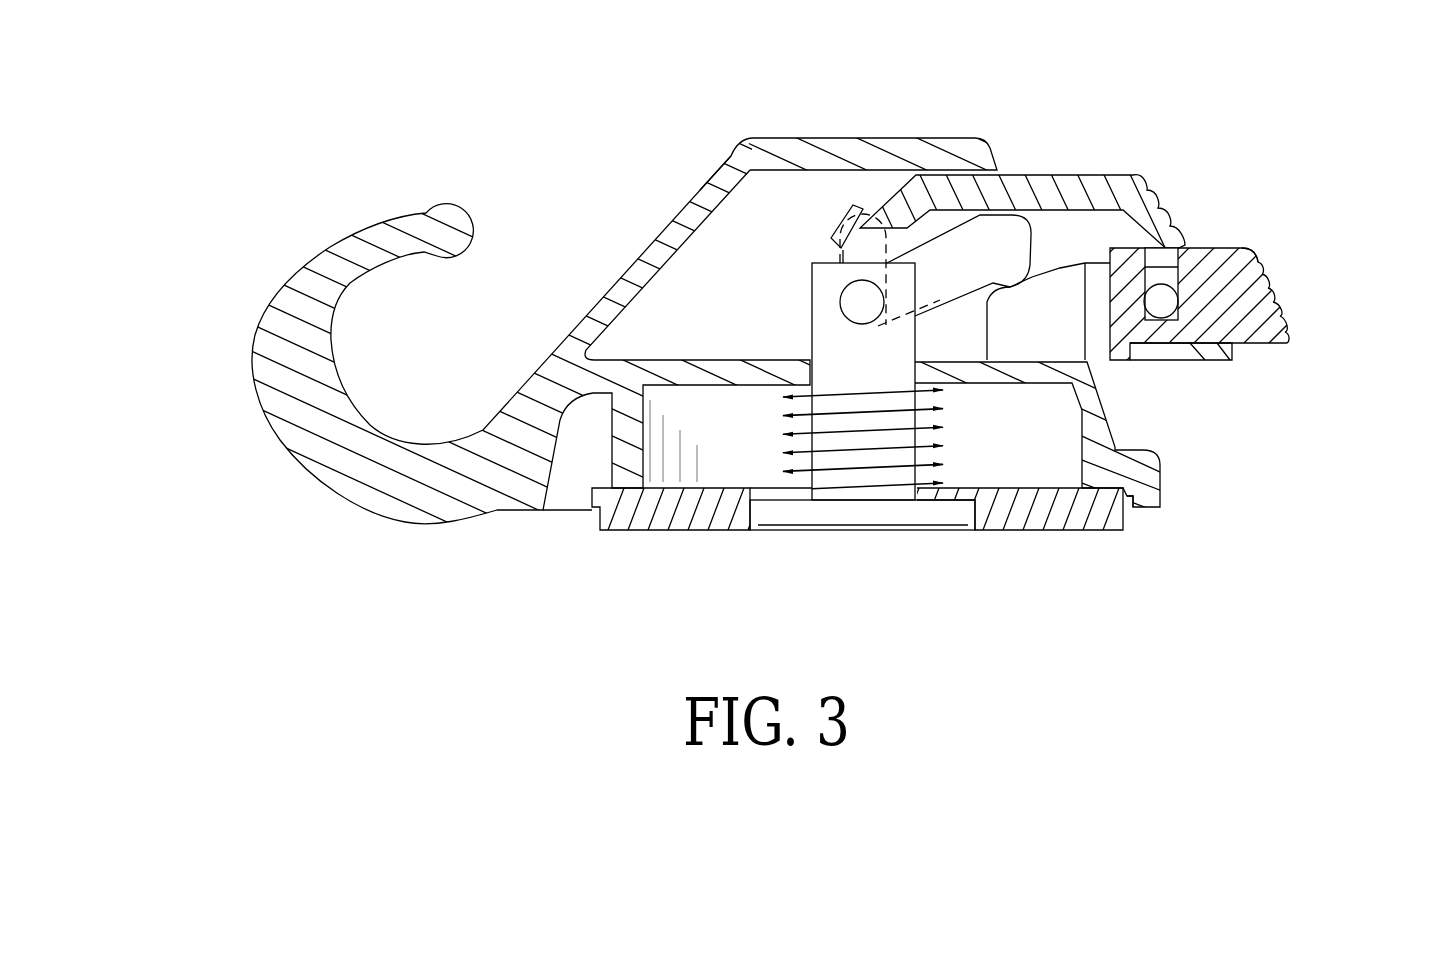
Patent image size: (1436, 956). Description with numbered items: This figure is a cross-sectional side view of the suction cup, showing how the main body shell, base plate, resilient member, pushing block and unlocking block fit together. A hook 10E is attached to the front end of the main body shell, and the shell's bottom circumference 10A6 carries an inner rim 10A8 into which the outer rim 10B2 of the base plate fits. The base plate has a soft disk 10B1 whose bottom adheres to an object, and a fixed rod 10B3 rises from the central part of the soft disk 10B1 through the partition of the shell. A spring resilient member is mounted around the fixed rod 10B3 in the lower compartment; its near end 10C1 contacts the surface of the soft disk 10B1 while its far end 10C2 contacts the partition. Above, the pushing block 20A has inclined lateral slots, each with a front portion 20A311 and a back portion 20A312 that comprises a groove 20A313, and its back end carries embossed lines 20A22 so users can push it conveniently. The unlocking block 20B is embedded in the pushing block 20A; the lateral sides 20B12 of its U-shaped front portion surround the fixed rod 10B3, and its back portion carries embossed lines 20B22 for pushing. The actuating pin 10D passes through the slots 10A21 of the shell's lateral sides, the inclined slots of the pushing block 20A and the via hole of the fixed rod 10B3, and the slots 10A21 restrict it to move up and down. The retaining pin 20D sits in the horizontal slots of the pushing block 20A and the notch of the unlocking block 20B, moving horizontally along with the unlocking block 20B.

The hook 10E is at (302, 252).
The actuating pin 10D is at (853, 298).
The fixed rod 10B3 is at (826, 345).
The slot 10A21 is at (853, 298).
The front portion 20A311 is at (835, 300).
The groove 20A313 is at (1022, 285).
The pushing block 20A is at (1120, 166).
The embossed lines 20A22 is at (1172, 215).
The back portion 20A312 is at (1015, 245).
The lateral sides 20B12 is at (1070, 323).
The unlocking block 20B is at (1282, 260).
The embossed lines 20B22 is at (1265, 278).
The retaining pin 20D is at (1165, 310).
The bottom circumference 10A6 is at (1117, 473).
The inner rim 10A8 is at (1127, 508).
The soft disk 10B1 is at (643, 523).
The outer rim 10B2 is at (1127, 527).
The far end 10C2 is at (780, 397).
The near end 10C1 is at (928, 465).